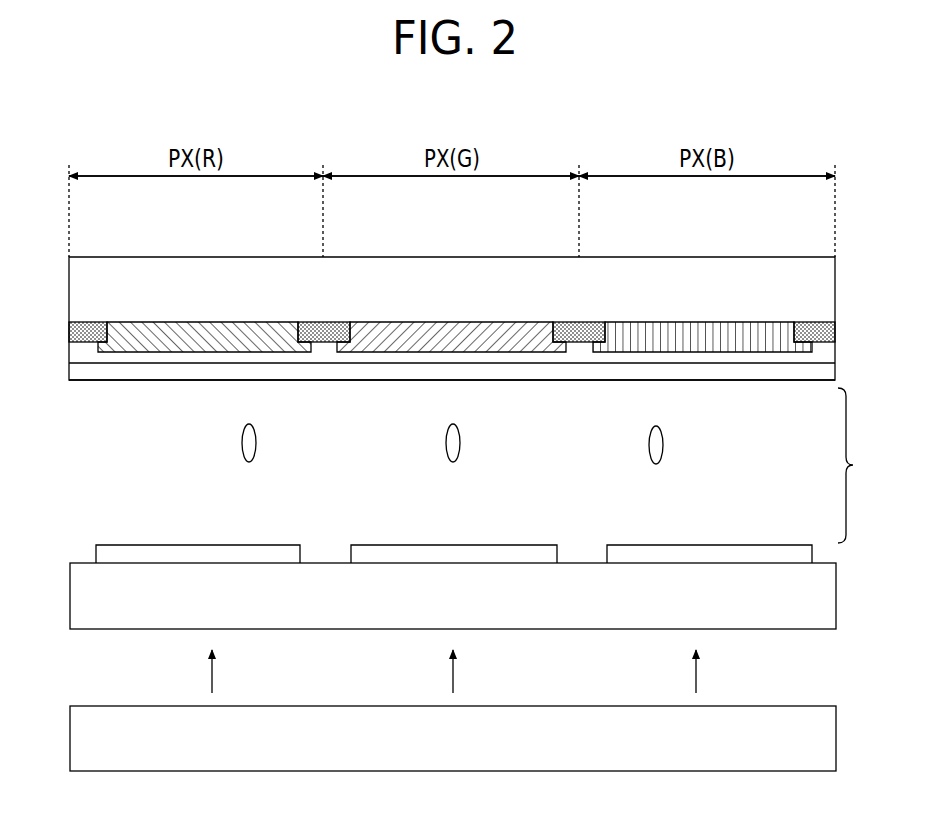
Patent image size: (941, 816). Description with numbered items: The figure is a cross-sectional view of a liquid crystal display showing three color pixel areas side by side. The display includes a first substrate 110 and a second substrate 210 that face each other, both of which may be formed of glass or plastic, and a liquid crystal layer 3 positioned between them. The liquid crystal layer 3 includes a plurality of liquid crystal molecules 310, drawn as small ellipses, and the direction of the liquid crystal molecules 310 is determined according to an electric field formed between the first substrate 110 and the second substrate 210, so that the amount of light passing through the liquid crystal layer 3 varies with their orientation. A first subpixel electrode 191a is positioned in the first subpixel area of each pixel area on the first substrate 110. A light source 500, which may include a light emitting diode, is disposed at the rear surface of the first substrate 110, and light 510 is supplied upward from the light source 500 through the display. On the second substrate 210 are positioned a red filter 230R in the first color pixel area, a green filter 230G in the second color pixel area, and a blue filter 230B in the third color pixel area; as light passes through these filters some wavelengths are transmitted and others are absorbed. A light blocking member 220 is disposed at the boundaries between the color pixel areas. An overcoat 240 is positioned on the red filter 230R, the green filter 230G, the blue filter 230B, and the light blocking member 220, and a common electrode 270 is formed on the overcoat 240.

The liquid crystal layer 3 is at (856, 465).
The first substrate 110 is at (822, 596).
The first subpixel electrode 191a is at (206, 557).
The second substrate 210 is at (815, 288).
The light blocking member 220 is at (82, 330).
The red filter 230R is at (211, 330).
The green filter 230G is at (452, 330).
The blue filter 230B is at (697, 330).
The overcoat 240 is at (822, 350).
The common electrode 270 is at (820, 372).
The liquid crystal molecule 310 is at (665, 443).
The light source 500 is at (822, 738).
The light 510 is at (700, 670).